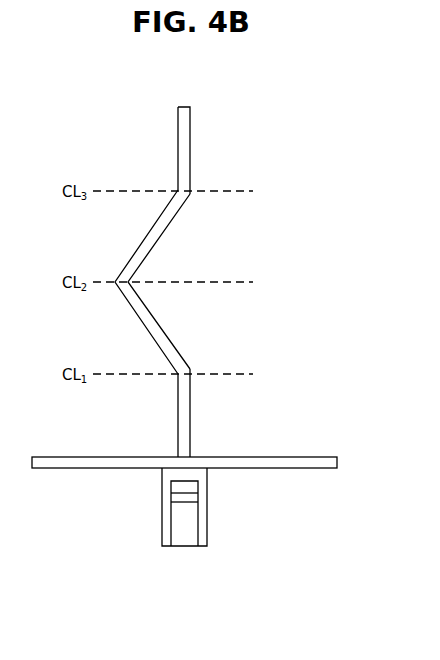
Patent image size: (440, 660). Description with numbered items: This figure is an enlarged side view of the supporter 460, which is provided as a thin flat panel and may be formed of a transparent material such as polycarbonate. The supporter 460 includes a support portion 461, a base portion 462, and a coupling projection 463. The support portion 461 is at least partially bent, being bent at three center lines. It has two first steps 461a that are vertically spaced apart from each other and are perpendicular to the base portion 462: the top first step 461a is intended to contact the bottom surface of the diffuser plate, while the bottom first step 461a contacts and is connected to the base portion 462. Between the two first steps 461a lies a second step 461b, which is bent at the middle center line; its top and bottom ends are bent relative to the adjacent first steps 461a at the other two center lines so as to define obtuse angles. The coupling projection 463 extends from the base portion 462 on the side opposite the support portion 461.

The supporter 460 is at (70, 94).
The support portion 461 is at (237, 282).
The first step 461a is at (187, 152).
The second step 461b is at (155, 239).
The base portion 462 is at (276, 463).
The coupling projection 463 is at (188, 528).